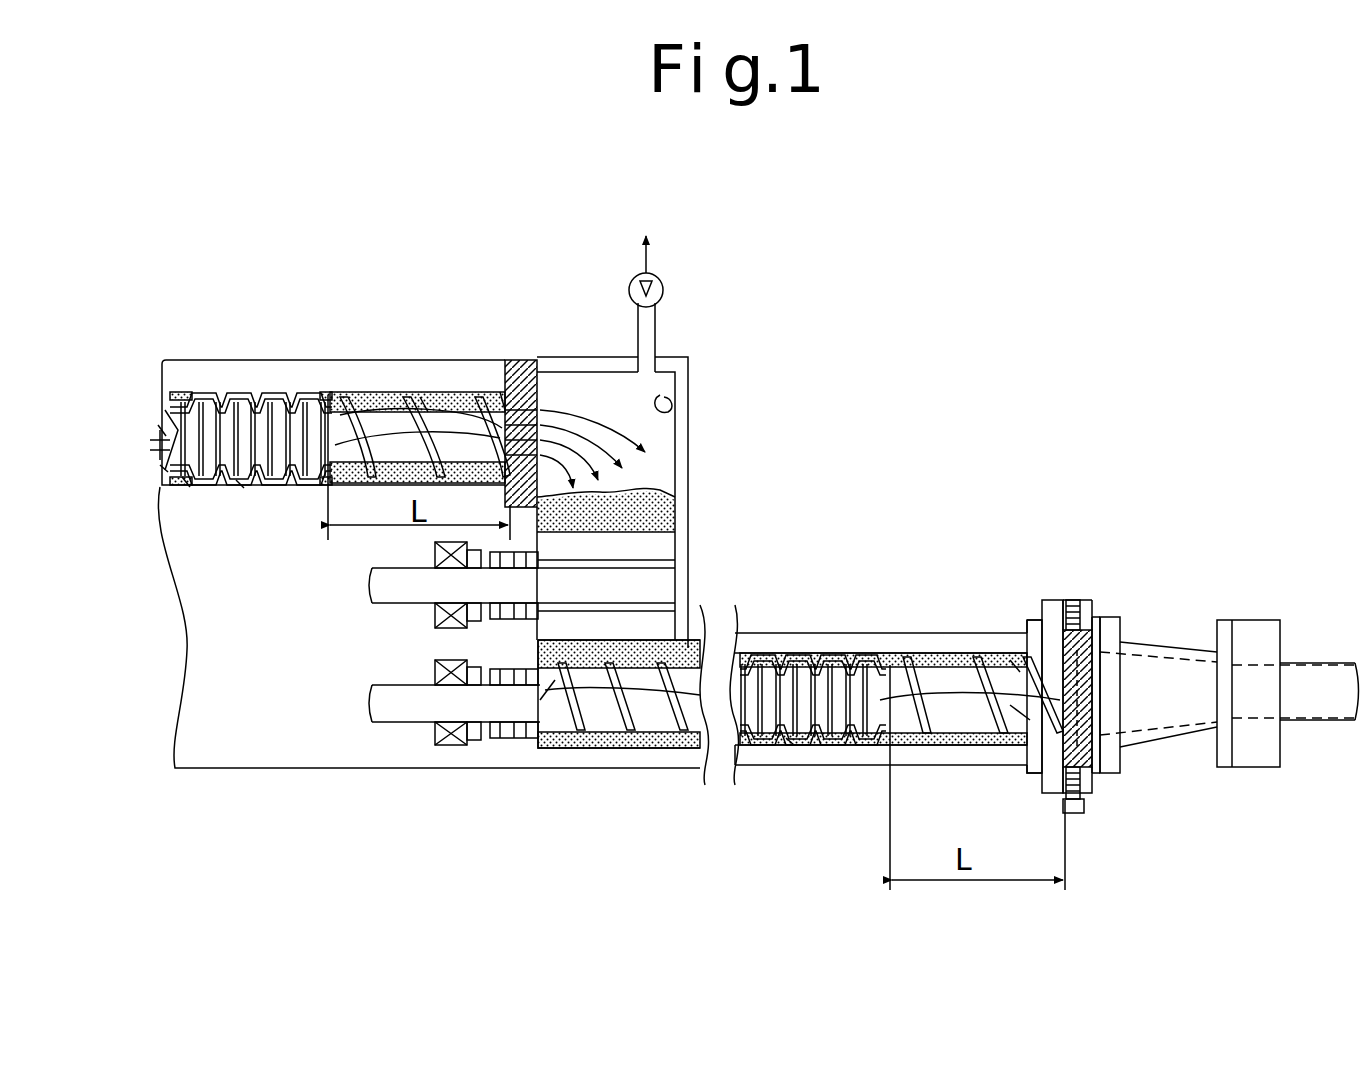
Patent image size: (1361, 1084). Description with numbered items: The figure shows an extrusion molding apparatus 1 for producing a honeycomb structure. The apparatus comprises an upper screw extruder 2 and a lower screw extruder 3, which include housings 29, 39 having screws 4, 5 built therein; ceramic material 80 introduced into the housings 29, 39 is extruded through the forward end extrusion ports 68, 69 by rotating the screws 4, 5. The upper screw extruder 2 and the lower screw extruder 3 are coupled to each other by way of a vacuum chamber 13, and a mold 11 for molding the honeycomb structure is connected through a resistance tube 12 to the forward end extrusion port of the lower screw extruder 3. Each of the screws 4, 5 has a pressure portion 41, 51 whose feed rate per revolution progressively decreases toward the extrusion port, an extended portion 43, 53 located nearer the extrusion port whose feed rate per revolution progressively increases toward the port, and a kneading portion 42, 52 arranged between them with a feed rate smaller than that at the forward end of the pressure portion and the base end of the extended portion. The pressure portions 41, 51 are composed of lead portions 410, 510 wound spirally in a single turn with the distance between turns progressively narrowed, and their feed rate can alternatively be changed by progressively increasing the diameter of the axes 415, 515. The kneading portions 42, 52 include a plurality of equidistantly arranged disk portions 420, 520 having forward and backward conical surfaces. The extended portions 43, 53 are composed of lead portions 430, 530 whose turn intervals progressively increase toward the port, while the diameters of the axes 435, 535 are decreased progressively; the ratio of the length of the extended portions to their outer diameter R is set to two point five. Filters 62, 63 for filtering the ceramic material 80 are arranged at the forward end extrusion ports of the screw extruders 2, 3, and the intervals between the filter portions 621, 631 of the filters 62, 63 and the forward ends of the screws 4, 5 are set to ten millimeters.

The extrusion molding apparatus 1 is at (976, 390).
The screw extruder 2 is at (315, 370).
The screw extruder 3 is at (813, 760).
The screw 4 is at (190, 368).
The screw 5 is at (810, 690).
The mold 11 is at (1258, 745).
The resistance tube 12 is at (1175, 710).
The vacuum chamber 13 is at (675, 398).
The housing 29 is at (247, 362).
The housing 39 is at (848, 745).
The pressure portion 41 is at (148, 450).
The lead portion 410 is at (155, 468).
The axis 415 is at (155, 432).
The kneading portion 42 is at (240, 487).
The disk portion 420 is at (185, 487).
The extended portion 43 is at (453, 362).
The lead portion 430 is at (420, 372).
The axis 435 is at (378, 372).
The pressure portion 51 is at (622, 748).
The lead portion 510 is at (566, 748).
The axis 515 is at (530, 745).
The kneading portion 52 is at (765, 745).
The disk portion 520 is at (790, 745).
The extended portion 53 is at (945, 690).
The lead portion 530 is at (1015, 660).
The axis 535 is at (1020, 715).
The filter 62 is at (518, 370).
The filter portion 621 is at (500, 372).
The filter 63 is at (1090, 630).
The filter portion 631 is at (1052, 610).
The forward end extrusion port 68 is at (540, 400).
The forward end extrusion port 69 is at (1112, 700).
The ceramic material 80 is at (650, 518).
The outer diameter of extended portion R is at (342, 366).